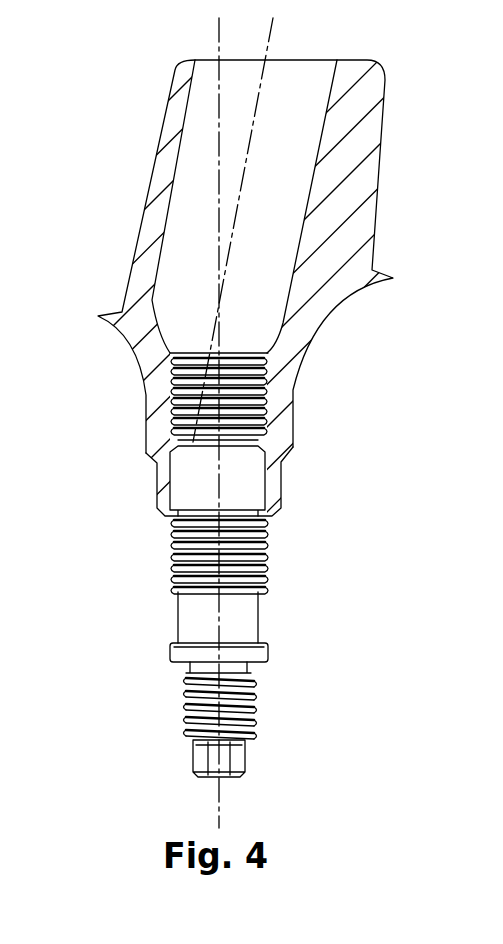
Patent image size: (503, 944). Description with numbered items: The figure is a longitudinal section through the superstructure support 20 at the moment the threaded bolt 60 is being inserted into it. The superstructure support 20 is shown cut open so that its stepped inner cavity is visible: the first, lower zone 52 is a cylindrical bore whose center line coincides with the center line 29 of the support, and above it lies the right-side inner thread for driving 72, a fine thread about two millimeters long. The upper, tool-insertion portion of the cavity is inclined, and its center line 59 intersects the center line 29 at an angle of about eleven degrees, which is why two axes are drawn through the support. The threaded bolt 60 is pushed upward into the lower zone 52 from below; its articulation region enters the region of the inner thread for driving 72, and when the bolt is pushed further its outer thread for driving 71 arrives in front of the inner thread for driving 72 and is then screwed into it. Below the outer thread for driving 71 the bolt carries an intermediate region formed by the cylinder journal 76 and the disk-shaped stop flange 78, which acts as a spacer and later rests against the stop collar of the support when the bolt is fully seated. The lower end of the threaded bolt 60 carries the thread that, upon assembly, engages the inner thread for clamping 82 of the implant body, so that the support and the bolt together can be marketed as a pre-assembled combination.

The superstructure support 20 is at (342, 213).
The center line 29 is at (219, 477).
The first, lower zone 52 is at (268, 493).
The center line 59 is at (249, 153).
The threaded bolt 60 is at (267, 648).
The outer thread for driving 71 is at (267, 551).
The inner thread for driving 72 is at (267, 385).
The cylinder journal 76 is at (192, 618).
The stop flange 78 is at (175, 652).
The inner thread for clamping 82 is at (255, 698).